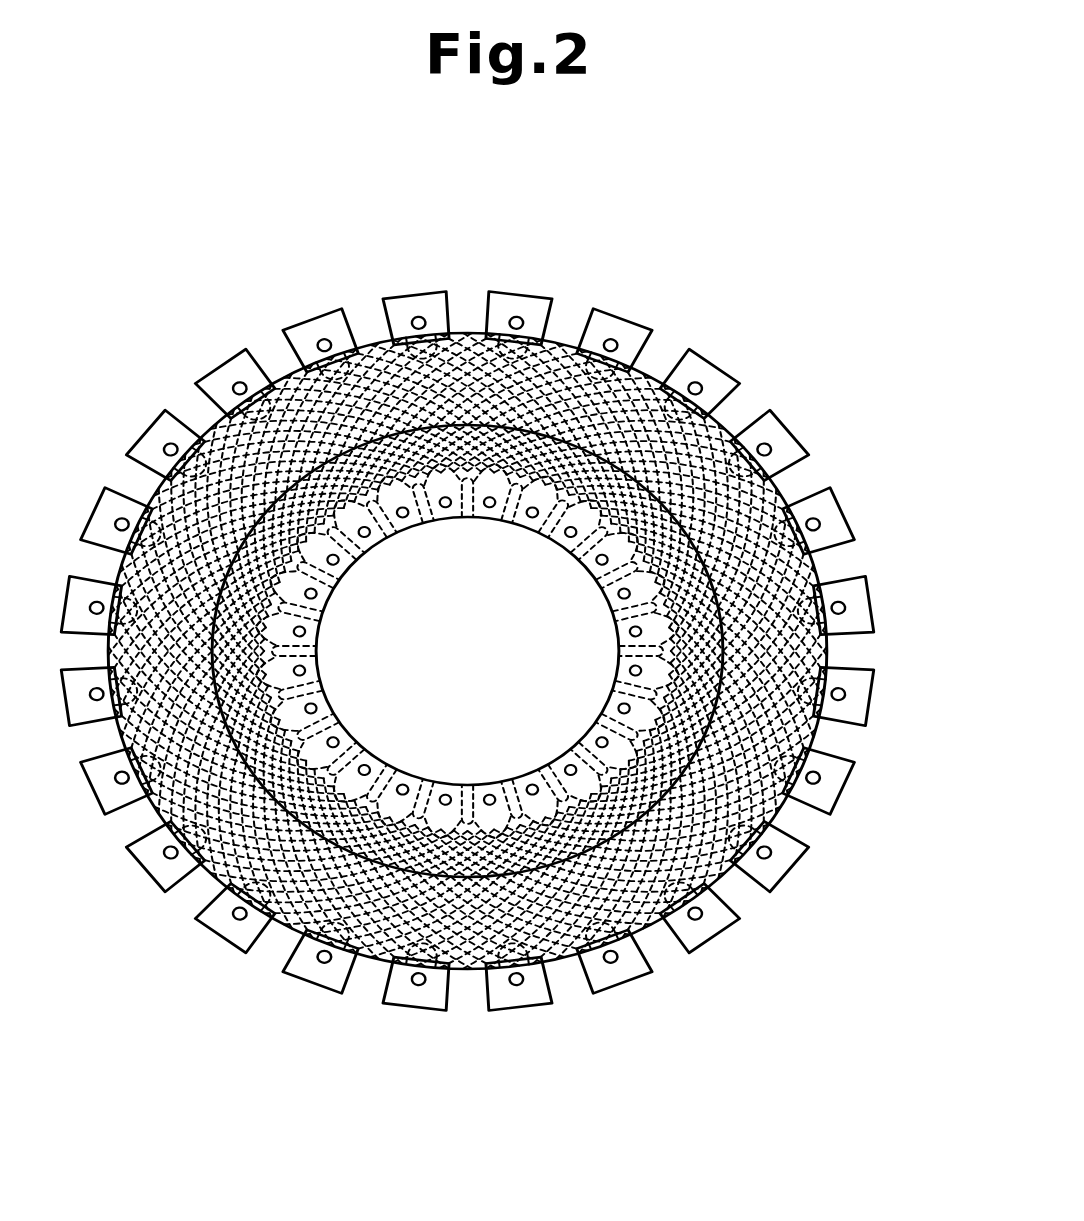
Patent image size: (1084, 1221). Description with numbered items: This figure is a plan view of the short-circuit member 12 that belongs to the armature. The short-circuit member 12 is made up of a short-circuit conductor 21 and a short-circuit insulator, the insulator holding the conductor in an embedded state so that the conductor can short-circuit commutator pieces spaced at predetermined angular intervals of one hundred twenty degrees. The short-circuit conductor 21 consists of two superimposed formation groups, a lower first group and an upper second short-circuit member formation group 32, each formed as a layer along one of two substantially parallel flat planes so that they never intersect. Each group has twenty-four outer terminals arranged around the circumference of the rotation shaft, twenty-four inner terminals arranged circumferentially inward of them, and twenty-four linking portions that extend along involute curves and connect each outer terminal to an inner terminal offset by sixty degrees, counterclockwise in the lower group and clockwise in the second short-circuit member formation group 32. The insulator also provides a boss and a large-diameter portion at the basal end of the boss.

The short-circuit member 12 is at (780, 272).
The short-circuit conductor 21 is at (757, 328).
The second short-circuit member formation group 32 is at (467, 650).